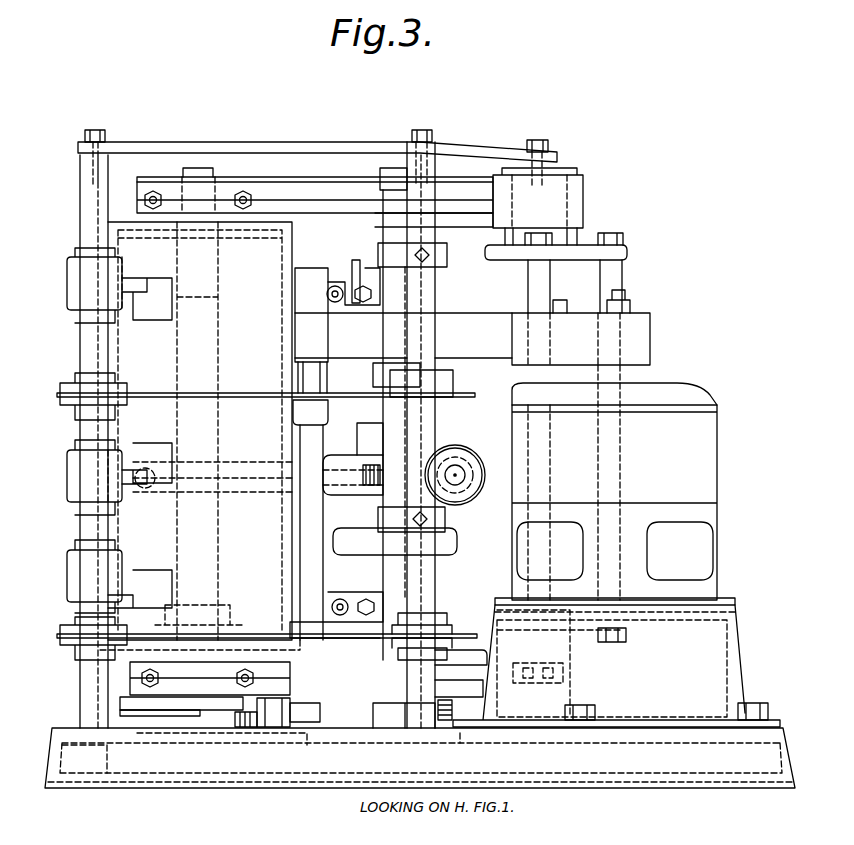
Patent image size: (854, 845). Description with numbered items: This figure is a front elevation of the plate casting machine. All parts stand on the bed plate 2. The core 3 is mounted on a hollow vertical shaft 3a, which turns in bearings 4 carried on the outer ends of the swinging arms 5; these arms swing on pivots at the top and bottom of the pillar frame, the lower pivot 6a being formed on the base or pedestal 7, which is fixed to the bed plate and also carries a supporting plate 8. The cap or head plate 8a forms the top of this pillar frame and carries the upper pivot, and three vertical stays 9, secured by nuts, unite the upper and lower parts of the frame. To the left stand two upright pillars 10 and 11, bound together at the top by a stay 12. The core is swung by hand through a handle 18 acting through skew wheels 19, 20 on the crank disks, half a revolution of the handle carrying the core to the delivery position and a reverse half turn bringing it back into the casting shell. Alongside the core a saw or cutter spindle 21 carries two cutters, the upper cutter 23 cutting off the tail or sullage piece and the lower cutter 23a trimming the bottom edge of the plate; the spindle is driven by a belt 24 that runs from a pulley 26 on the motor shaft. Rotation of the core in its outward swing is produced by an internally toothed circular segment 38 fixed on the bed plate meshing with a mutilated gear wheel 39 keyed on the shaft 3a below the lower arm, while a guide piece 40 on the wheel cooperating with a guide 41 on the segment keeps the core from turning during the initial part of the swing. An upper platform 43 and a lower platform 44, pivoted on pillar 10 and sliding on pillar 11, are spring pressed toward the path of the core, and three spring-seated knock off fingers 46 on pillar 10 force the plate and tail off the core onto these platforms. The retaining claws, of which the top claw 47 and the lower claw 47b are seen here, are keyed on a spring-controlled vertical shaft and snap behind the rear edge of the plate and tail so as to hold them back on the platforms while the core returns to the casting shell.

The bed plate 2 is at (68, 730).
The core 3 is at (200, 431).
The hollow vertical shaft 3a is at (210, 172).
The bearings 4 is at (258, 195).
The arms 5 is at (336, 192).
The lower pivot 6a is at (565, 682).
The base or pedestal 7 is at (590, 712).
The supporting plate 8 is at (630, 636).
The cap or head plate 8a is at (625, 254).
The vertical stays 9 is at (600, 287).
The upright pillar 10 is at (85, 224).
The upright pillar 11 is at (420, 298).
The stay 12 is at (278, 144).
The handle 18 is at (262, 462).
The skew wheel 19 is at (474, 460).
The skew wheel 20 is at (363, 477).
The saw or cutter spindle 21 is at (300, 440).
The upper cutter 23 is at (325, 395).
The lower cutter 23a is at (292, 633).
The belt 24 is at (484, 322).
The pulley 26 is at (650, 337).
The circular segment 38 is at (165, 722).
The mutilated gear wheel 39 is at (244, 728).
The guide piece 40 is at (158, 710).
The guide 41 is at (120, 713).
The upper platform 43 is at (196, 393).
The lower platform 44 is at (368, 640).
The knock off fingers 46 is at (158, 312).
The top retaining claw 47 is at (356, 266).
The retaining claw 47b is at (368, 598).